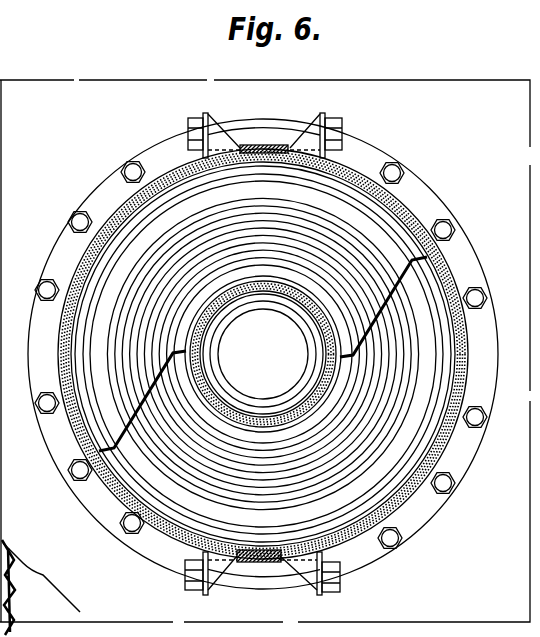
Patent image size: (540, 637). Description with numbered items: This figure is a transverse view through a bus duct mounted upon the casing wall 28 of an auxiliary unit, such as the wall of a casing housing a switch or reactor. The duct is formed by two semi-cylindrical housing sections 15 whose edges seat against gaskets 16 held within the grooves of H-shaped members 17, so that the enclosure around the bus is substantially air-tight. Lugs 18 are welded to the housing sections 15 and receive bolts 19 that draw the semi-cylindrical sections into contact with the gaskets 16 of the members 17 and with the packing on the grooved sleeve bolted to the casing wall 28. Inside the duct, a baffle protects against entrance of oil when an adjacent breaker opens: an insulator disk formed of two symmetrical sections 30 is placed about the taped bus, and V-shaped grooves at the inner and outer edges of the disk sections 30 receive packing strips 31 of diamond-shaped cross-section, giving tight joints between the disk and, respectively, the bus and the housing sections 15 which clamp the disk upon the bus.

The semi-cylindrical housing section 15 is at (415, 215).
The gasket 16 is at (268, 557).
The H-shaped member 17 is at (249, 147).
The lug 18 is at (204, 140).
The bolt 19 is at (267, 133).
The casing wall 28 is at (438, 92).
The insulator disk section 30 is at (178, 378).
The packing strip 31 is at (442, 257).